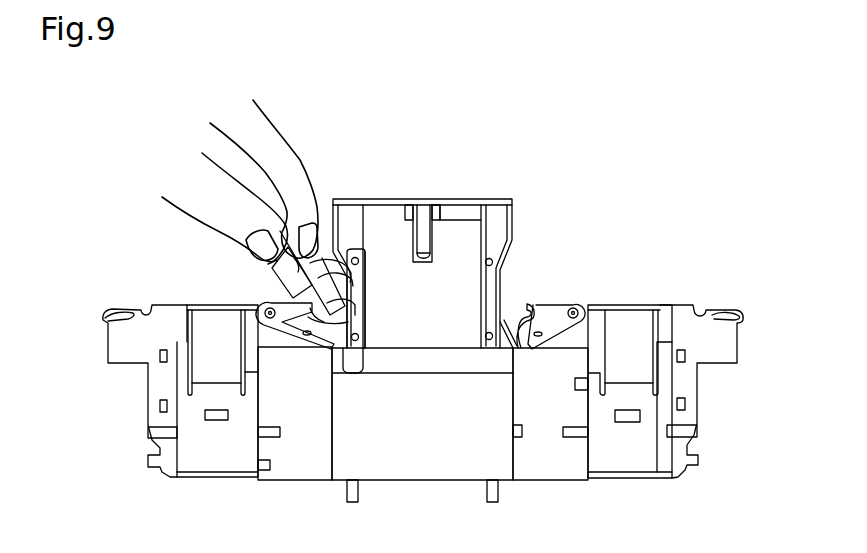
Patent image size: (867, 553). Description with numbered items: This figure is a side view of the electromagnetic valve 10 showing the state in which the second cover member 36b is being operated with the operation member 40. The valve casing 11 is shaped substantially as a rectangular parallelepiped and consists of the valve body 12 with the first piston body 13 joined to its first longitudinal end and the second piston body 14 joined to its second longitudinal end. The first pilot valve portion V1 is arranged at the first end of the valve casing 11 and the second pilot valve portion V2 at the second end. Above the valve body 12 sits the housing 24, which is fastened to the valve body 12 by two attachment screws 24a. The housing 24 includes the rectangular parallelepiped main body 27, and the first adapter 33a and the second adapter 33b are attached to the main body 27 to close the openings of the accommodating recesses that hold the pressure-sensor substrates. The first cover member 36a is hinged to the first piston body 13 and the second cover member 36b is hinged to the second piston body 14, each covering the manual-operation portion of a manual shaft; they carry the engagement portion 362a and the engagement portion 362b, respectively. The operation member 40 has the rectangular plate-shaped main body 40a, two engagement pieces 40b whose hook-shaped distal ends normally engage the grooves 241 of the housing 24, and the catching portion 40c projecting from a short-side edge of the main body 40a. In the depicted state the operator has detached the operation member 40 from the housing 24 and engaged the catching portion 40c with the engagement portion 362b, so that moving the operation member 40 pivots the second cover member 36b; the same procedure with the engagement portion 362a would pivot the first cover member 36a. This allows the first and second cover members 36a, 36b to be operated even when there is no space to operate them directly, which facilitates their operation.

The electromagnetic valve 10 is at (692, 177).
The valve casing 11 is at (452, 470).
The valve body 12 is at (388, 465).
The first piston body 13 is at (553, 465).
The second piston body 14 is at (294, 466).
The housing 24 is at (389, 199).
The attachment screws 24a is at (423, 264).
The grooves 241 is at (437, 224).
The main body 27 is at (457, 217).
The first adapter 33a is at (512, 198).
The second adapter 33b is at (333, 200).
The first cover member 36a is at (565, 302).
The second cover member 36b is at (265, 338).
The engagement portion 362a is at (520, 302).
The engagement portion 362b is at (293, 330).
The operation member 40 is at (360, 263).
The main body 40a is at (366, 281).
The engagement pieces 40b is at (285, 278).
The catching portion 40c is at (338, 326).
The first pilot valve portion V1 is at (635, 303).
The second pilot valve portion V2 is at (198, 305).